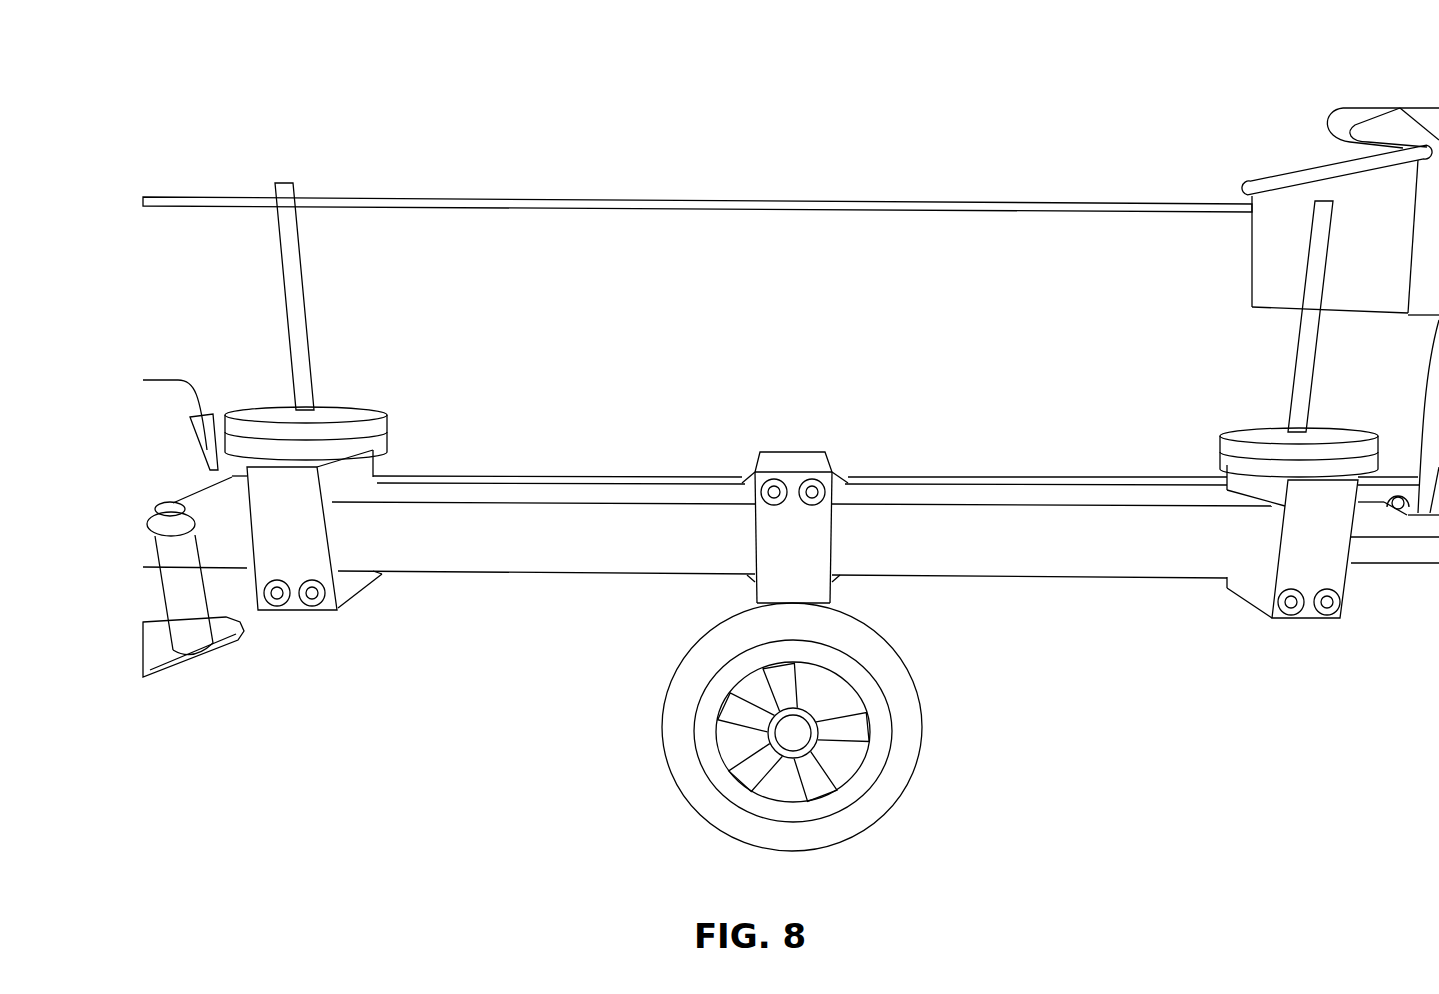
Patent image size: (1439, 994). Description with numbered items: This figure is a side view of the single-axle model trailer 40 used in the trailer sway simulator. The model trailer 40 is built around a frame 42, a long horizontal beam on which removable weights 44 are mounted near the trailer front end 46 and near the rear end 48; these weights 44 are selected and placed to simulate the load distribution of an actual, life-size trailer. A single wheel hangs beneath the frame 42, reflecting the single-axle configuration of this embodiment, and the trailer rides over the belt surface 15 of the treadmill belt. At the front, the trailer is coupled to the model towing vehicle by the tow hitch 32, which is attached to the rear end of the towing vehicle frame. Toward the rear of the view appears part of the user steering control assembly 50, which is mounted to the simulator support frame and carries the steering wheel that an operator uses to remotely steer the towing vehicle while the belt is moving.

The belt surface 15 is at (1195, 770).
The tow hitch 32 is at (180, 637).
The model trailer 40 is at (1066, 457).
The frame 42 is at (480, 520).
The removable weights 44 is at (343, 413).
The trailer front end 46 is at (220, 518).
The rear end 48 is at (1170, 508).
The user steering control assembly 50 is at (1360, 207).